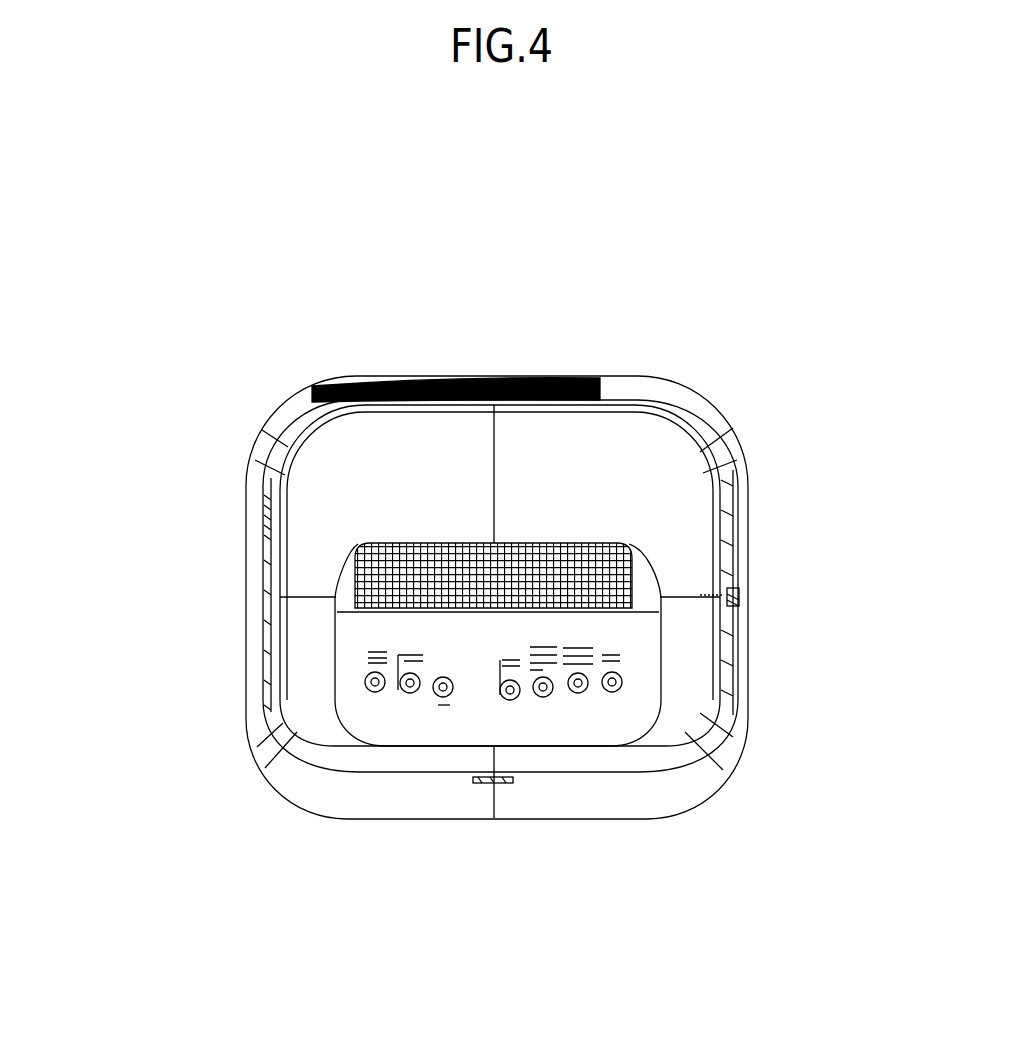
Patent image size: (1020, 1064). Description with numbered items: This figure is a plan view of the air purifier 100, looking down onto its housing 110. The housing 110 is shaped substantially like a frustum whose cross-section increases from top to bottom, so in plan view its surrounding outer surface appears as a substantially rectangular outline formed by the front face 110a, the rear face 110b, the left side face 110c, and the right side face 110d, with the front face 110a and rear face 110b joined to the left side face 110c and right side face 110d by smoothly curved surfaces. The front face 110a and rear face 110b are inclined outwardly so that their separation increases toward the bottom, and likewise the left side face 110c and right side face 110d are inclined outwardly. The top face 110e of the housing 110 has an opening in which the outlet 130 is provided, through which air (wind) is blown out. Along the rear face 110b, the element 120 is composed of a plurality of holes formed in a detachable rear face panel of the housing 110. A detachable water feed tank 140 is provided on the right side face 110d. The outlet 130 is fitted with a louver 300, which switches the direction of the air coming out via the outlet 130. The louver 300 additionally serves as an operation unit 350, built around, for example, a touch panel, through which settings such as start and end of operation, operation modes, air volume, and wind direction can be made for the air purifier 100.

The air purifier 100 is at (712, 327).
The housing 110 is at (730, 419).
The front face 110a is at (543, 820).
The rear face 110b is at (570, 374).
The left side face 110c is at (247, 622).
The right side face 110d is at (742, 640).
The top face 110e is at (267, 595).
The inlet 120 is at (480, 378).
The outlet 130 is at (268, 529).
The water feed tank 140 is at (730, 558).
The louver 300 is at (328, 673).
The operation unit 350 is at (420, 714).